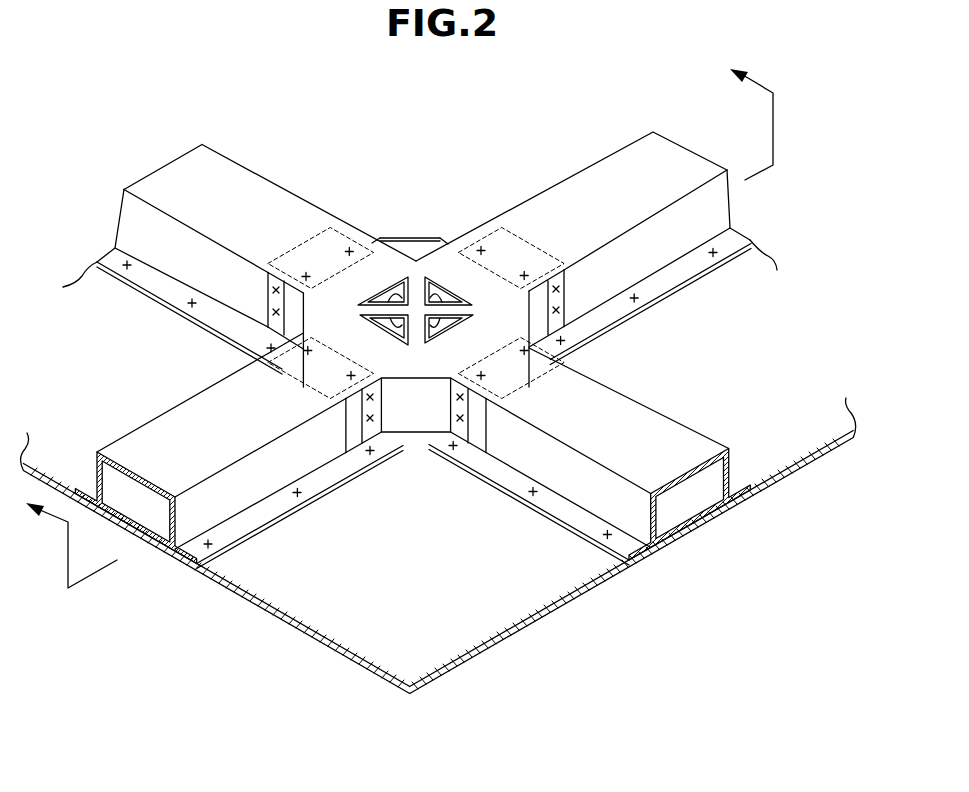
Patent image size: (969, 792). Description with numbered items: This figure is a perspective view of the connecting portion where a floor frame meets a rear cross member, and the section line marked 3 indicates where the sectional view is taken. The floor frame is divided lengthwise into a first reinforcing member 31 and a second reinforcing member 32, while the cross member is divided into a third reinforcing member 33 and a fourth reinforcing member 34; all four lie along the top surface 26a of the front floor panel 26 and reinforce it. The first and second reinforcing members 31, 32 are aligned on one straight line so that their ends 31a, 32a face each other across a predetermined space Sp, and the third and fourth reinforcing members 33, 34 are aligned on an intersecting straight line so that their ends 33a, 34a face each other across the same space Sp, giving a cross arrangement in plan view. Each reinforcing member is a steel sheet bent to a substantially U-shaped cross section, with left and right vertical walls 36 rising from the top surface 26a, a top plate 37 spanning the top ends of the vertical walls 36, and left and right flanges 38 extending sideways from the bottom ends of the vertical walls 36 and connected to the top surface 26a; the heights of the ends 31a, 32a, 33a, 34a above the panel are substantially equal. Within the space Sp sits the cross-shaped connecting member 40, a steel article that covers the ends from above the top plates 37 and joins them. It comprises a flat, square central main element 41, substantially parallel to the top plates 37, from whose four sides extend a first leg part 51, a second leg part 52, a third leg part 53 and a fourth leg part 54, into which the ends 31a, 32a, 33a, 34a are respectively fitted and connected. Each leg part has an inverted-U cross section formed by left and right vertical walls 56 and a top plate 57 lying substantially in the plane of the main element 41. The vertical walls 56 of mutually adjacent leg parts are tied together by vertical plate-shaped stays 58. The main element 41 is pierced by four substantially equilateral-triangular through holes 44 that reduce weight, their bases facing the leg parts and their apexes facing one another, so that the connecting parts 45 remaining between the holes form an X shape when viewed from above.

The front floor panel 26 is at (385, 638).
The top surface of front floor panel 26a is at (432, 653).
The first reinforcing member 31 is at (266, 520).
The end of first reinforcing member 31a is at (265, 395).
The second reinforcing member 32 is at (562, 170).
The end of second reinforcing member 32a is at (518, 240).
The third reinforcing member 33 is at (222, 148).
The end of third reinforcing member 33a is at (300, 235).
The fourth reinforcing member 34 is at (705, 425).
The end of fourth reinforcing member 34a is at (580, 368).
The vertical wall 36 is at (133, 215).
The top plate 37 is at (180, 178).
The flange 38 is at (103, 247).
The connecting member 40 is at (488, 450).
The main element 41 is at (456, 246).
The through hole 44 is at (436, 286).
The connecting part 45 is at (375, 215).
The first leg part 51 is at (275, 382).
The second leg part 52 is at (497, 255).
The third leg part 53 is at (330, 240).
The fourth leg part 54 is at (510, 383).
The vertical wall of leg part 56 is at (337, 405).
The top plate of leg part 57 is at (310, 390).
The stay 58 is at (278, 292).
The space Sp is at (410, 385).
The section line 3- 3 is at (415, 328).